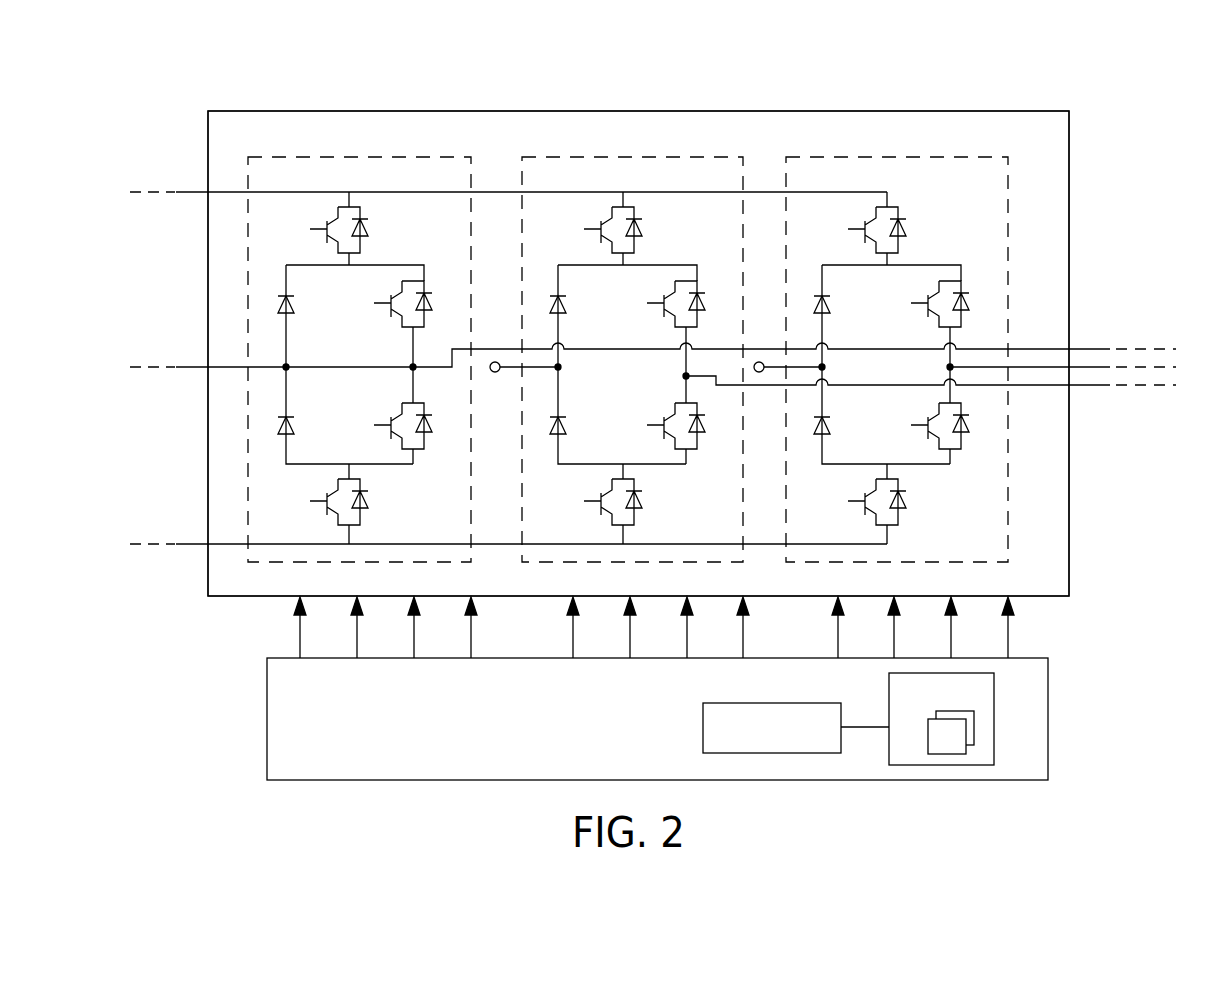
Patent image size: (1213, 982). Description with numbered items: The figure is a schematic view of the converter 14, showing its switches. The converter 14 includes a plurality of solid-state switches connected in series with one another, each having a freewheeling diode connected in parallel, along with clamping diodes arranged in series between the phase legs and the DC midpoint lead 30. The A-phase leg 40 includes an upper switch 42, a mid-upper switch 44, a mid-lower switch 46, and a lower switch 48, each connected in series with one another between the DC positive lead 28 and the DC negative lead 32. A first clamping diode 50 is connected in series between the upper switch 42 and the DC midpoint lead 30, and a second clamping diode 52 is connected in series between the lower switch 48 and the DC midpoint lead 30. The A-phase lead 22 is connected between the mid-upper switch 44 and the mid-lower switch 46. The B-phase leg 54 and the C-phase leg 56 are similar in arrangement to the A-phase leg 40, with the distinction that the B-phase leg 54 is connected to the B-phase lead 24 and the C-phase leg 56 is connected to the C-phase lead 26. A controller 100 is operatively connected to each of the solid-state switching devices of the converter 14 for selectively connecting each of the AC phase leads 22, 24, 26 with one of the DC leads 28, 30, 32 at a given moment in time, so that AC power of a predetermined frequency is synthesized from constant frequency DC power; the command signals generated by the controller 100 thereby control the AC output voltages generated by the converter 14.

The converter 14 is at (246, 596).
The A-phase lead 22 is at (1083, 349).
The B-phase lead 24 is at (1100, 367).
The C-phase lead 26 is at (1083, 385).
The DC positive lead 28 is at (225, 192).
The DC midpoint lead 30 is at (224, 367).
The DC negative lead 32 is at (225, 544).
The A-phase leg 40 is at (436, 157).
The upper switch 42 is at (340, 233).
The mid-upper switch 44 is at (403, 305).
The mid-lower switch 46 is at (407, 423).
The lower switch 48 is at (340, 483).
The first clamping diode 50 is at (293, 300).
The second clamping diode 52 is at (295, 425).
The B-phase leg 54 is at (710, 157).
The C-phase leg 56 is at (973, 157).
The controller 100 is at (631, 726).